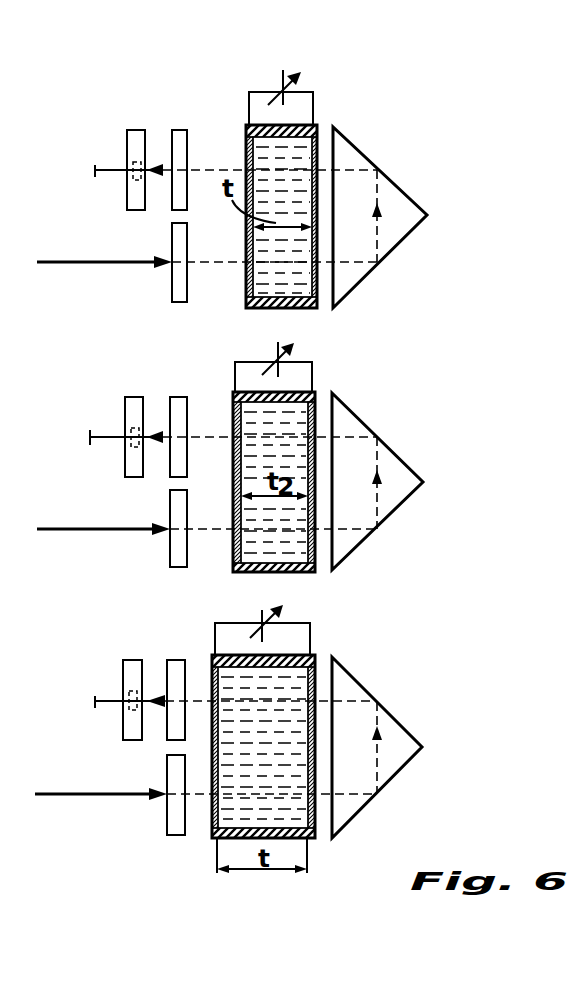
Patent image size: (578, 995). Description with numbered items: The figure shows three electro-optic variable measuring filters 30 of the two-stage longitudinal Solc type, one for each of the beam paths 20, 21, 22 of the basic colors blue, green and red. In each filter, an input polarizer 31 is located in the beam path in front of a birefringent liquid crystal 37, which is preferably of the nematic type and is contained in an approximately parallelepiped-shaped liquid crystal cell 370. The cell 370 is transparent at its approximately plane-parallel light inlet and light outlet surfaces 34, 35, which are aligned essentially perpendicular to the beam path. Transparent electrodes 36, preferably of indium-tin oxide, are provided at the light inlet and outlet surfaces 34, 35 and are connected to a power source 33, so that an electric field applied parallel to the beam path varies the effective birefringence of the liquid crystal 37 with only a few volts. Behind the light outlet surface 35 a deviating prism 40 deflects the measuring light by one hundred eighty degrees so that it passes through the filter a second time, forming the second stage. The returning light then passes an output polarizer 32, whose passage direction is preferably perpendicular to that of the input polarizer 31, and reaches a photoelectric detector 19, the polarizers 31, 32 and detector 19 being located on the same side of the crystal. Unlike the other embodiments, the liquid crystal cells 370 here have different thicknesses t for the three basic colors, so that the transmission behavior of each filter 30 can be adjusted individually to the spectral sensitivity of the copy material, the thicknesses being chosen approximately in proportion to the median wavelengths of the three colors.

The photoelectric detector 19 is at (137, 133).
The beam path of basic color blue 20 is at (65, 260).
The beam path of basic color green 21 is at (63, 527).
The beam path of basic color red 22 is at (76, 792).
The variable measuring filter 30 is at (372, 120).
The input polarizer 31 is at (177, 290).
The output polarizer 32 is at (180, 133).
The power source 33 is at (277, 90).
The light inlet surface 34 is at (247, 283).
The light outlet surface 35 is at (317, 290).
The transparent electrode 36 is at (245, 135).
The liquid crystal 37 is at (302, 192).
The deviating prism 40 is at (400, 228).
The liquid crystal cell 370 is at (309, 310).